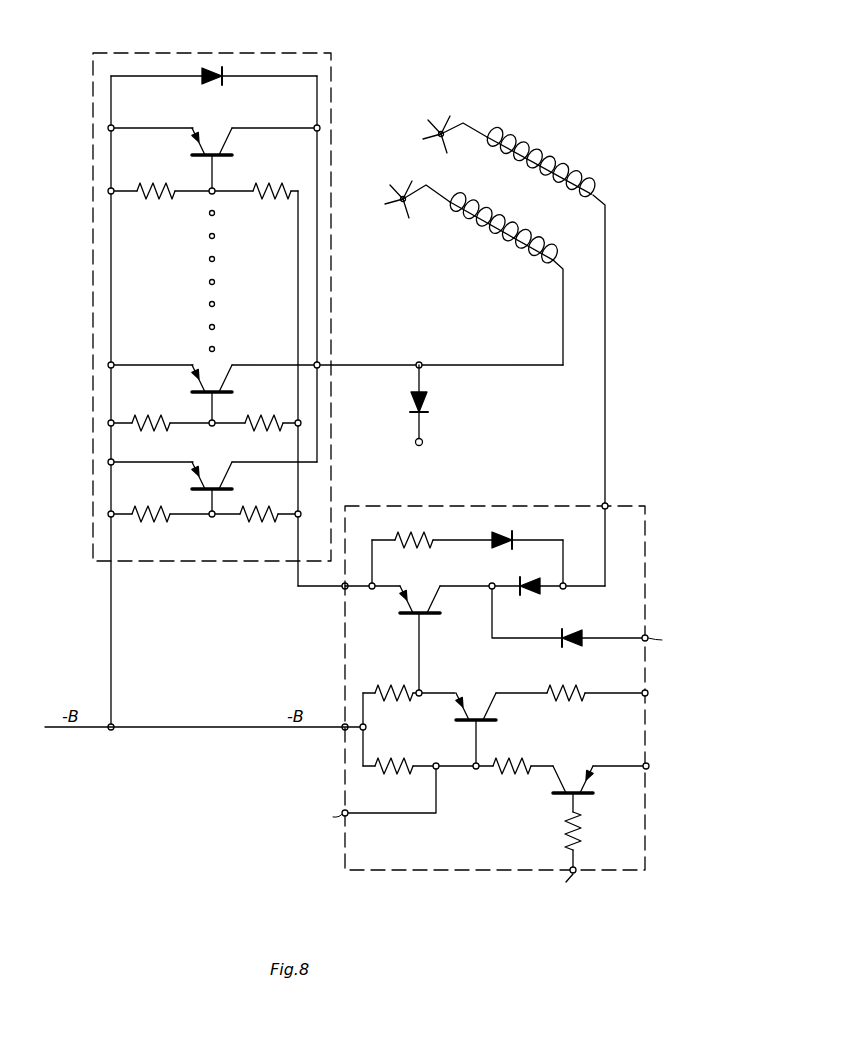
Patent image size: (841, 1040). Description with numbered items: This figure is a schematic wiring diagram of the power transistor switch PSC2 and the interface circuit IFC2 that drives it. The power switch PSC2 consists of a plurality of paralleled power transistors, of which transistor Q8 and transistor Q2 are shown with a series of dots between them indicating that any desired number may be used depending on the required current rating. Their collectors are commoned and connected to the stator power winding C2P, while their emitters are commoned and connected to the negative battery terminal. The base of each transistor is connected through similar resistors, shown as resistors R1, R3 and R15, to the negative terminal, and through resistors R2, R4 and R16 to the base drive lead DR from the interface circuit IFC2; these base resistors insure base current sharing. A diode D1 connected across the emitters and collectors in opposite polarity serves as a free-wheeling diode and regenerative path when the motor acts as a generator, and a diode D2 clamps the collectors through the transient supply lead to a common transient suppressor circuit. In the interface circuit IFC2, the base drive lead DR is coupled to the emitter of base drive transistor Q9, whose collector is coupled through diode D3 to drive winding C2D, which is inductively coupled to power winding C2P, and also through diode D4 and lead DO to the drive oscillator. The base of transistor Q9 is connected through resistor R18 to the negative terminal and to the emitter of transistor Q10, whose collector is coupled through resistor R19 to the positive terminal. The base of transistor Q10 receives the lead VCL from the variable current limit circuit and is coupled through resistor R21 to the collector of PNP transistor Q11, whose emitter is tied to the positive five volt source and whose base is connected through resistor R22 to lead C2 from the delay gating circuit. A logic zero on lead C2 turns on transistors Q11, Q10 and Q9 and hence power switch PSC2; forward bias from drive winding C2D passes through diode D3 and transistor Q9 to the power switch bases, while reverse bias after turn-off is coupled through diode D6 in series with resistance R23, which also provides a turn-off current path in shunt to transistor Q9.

The power transistor switch PSC2 is at (331, 88).
The free-wheeling diode D1 is at (207, 84).
The power transistor Q8 is at (236, 150).
The base resistor R15 is at (158, 203).
The base resistor R16 is at (272, 203).
The power transistor Q2 is at (235, 387).
The base resistor R3 is at (150, 411).
The base resistor R4 is at (255, 428).
The base resistor R1 is at (133, 524).
The base resistor R2 is at (253, 524).
The base drive lead DR is at (286, 588).
The drive winding C2D is at (548, 158).
The stator power winding C2P is at (507, 243).
The clamping diode D2 is at (427, 400).
The interface circuit IFC2 is at (646, 572).
The resistance R23 is at (432, 536).
The diode D6 is at (514, 532).
The base drive transistor Q9 is at (435, 616).
The diode D3 is at (538, 592).
The diode D4 is at (560, 644).
The drive oscillator lead DO is at (612, 638).
The resistor R18 is at (394, 683).
The transistor Q10 is at (496, 722).
The resistor R19 is at (575, 697).
The variable current limit lead VCL is at (410, 815).
The resistor R21 is at (508, 778).
The PNP transistor Q11 is at (571, 778).
The resistor R22 is at (582, 836).
The delay gating lead C2 is at (571, 865).